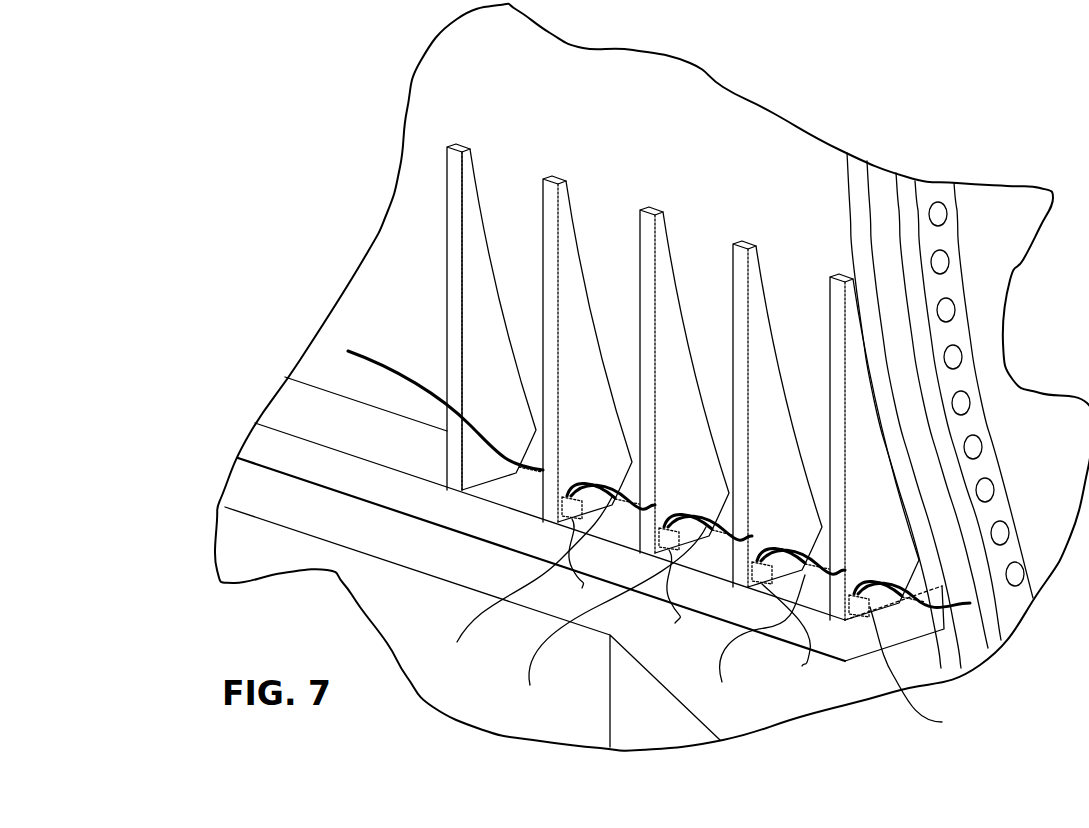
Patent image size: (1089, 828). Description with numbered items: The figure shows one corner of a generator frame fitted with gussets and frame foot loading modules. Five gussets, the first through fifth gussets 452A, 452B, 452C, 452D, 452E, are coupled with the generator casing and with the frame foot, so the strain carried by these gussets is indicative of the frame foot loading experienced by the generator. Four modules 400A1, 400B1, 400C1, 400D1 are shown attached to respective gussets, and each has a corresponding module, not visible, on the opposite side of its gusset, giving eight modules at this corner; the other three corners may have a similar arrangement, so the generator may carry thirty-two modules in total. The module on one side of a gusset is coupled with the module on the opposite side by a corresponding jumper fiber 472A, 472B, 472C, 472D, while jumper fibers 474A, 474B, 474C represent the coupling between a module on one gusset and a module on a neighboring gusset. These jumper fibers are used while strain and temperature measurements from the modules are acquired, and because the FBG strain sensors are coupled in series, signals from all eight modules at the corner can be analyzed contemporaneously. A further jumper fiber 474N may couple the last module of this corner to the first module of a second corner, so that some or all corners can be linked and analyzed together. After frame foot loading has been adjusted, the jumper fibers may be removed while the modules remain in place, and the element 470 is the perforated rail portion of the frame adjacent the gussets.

The first gusset 452A is at (855, 343).
The second gusset 452B is at (758, 273).
The third gusset 452C is at (655, 257).
The fourth gusset 452D is at (565, 205).
The fifth gusset 452E is at (458, 196).
The jumper fiber 472A is at (890, 577).
The jumper fiber 472B is at (800, 547).
The jumper fiber 472C is at (700, 512).
The jumper fiber 472D is at (625, 476).
The jumper fiber 474A is at (788, 637).
The jumper fiber 474B is at (671, 599).
The jumper fiber 474C is at (574, 565).
The jumper fiber 474N is at (367, 350).
The module 400A1 is at (935, 669).
The module 400B1 is at (751, 644).
The module 400C1 is at (609, 621).
The module 400D1 is at (521, 585).
The perforated rail 470 is at (928, 600).